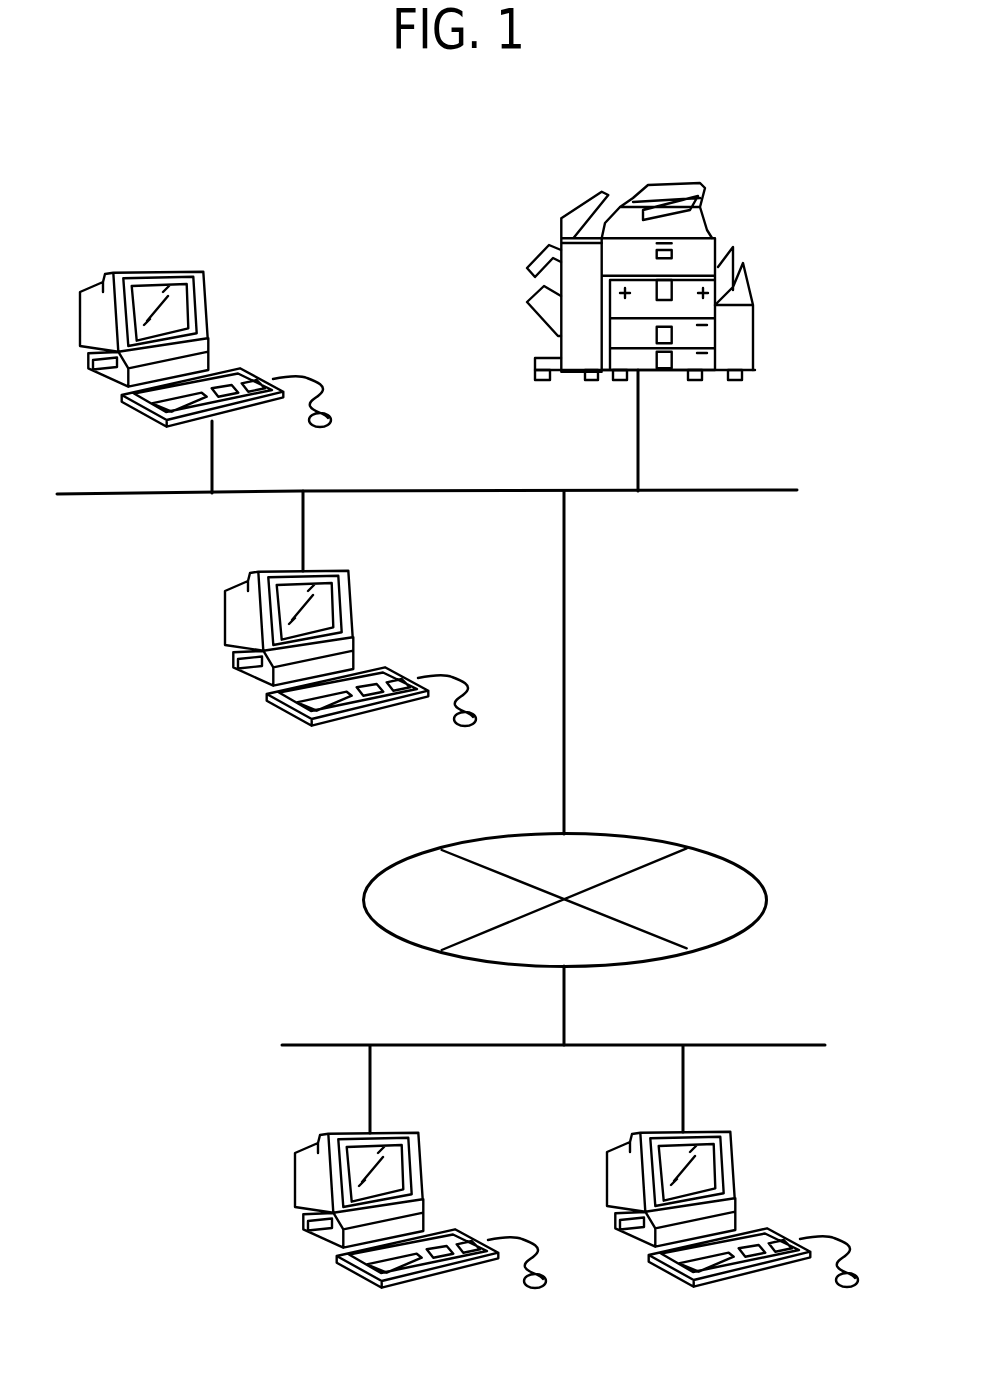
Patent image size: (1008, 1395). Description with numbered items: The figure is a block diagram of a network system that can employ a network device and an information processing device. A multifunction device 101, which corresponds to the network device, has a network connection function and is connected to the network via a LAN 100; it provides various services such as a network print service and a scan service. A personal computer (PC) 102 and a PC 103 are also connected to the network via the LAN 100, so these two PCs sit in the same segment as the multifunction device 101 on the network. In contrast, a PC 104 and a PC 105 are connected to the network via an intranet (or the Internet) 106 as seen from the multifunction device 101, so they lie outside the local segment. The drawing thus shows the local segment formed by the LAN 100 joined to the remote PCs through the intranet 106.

The LAN 100 is at (760, 489).
The multifunction device 101 is at (675, 182).
The personal computer (PC) 102 is at (157, 270).
The PC 103 is at (343, 719).
The PC 104 is at (727, 1288).
The PC 105 is at (410, 1288).
The intranet (or the Internet) 106 is at (363, 897).